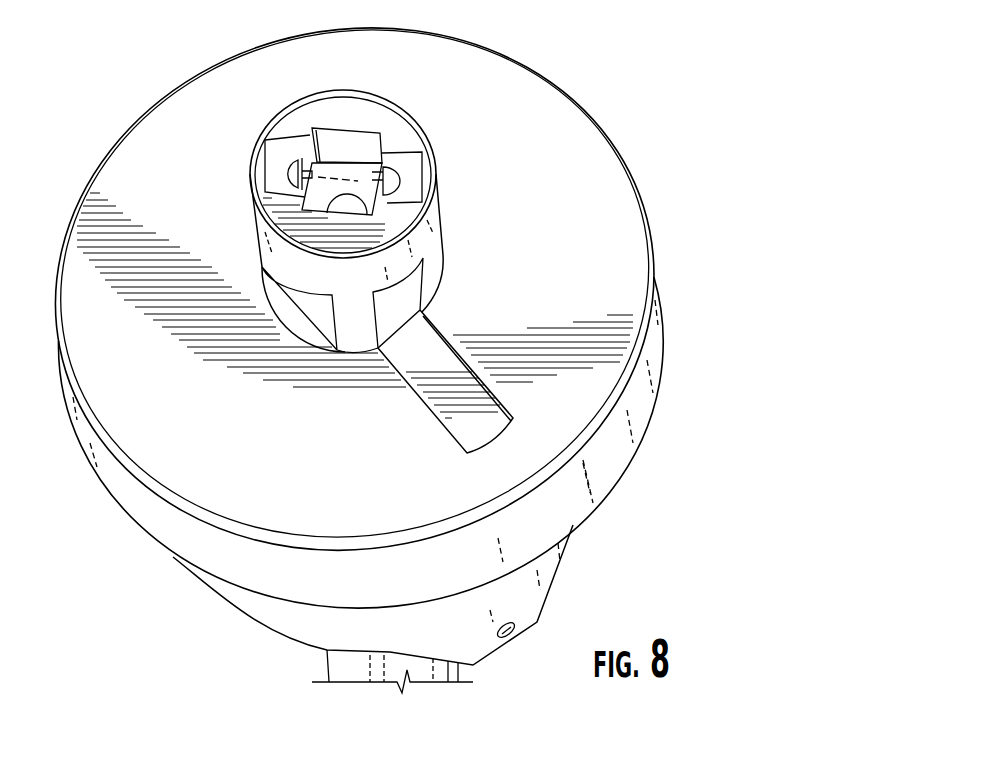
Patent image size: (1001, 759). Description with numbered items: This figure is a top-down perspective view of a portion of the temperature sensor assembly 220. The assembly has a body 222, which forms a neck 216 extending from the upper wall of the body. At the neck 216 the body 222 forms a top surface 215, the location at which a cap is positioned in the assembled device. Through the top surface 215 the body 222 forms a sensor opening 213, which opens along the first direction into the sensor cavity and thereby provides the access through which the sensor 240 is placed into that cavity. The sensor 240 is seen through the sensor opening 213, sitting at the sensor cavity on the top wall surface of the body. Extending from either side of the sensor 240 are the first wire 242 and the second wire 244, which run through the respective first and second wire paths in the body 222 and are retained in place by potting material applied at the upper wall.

The sensor assembly 220 is at (668, 88).
The body 222 is at (607, 240).
The neck 216 is at (268, 240).
The top surface 215 is at (341, 95).
The sensor opening 213 is at (327, 128).
The sensor 240 is at (343, 173).
The first wire 242 is at (280, 177).
The second wire 244 is at (397, 187).